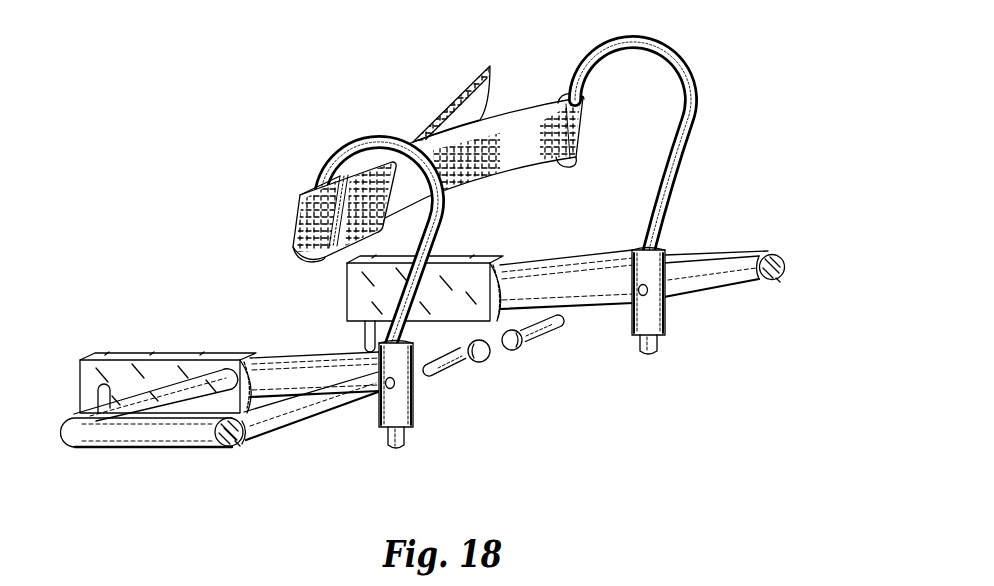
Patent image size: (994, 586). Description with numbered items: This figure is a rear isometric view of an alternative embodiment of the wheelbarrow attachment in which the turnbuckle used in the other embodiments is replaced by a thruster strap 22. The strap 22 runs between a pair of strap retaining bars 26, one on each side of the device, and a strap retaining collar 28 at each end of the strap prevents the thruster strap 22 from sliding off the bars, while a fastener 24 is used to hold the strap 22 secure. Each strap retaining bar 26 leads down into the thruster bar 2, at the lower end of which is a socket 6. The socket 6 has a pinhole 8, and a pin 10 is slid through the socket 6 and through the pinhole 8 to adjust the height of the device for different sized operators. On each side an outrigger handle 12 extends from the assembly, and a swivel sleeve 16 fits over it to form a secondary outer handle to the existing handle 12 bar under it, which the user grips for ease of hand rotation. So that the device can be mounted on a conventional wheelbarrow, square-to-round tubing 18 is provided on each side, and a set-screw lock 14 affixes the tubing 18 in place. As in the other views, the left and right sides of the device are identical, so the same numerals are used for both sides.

The thruster bar 2 is at (406, 438).
The socket 6 is at (378, 420).
The pinhole 8 is at (408, 387).
The pin 10 is at (448, 373).
The outrigger handle 12 is at (163, 447).
The set-screw lock 14 is at (96, 396).
The swivel sleeve 16 is at (300, 432).
The square-to-round tubing 18 is at (87, 358).
The thruster strap 22 is at (448, 97).
The fastener 24 is at (500, 105).
The strap retaining bar 26 is at (323, 165).
The strap retaining collar 28 is at (294, 251).